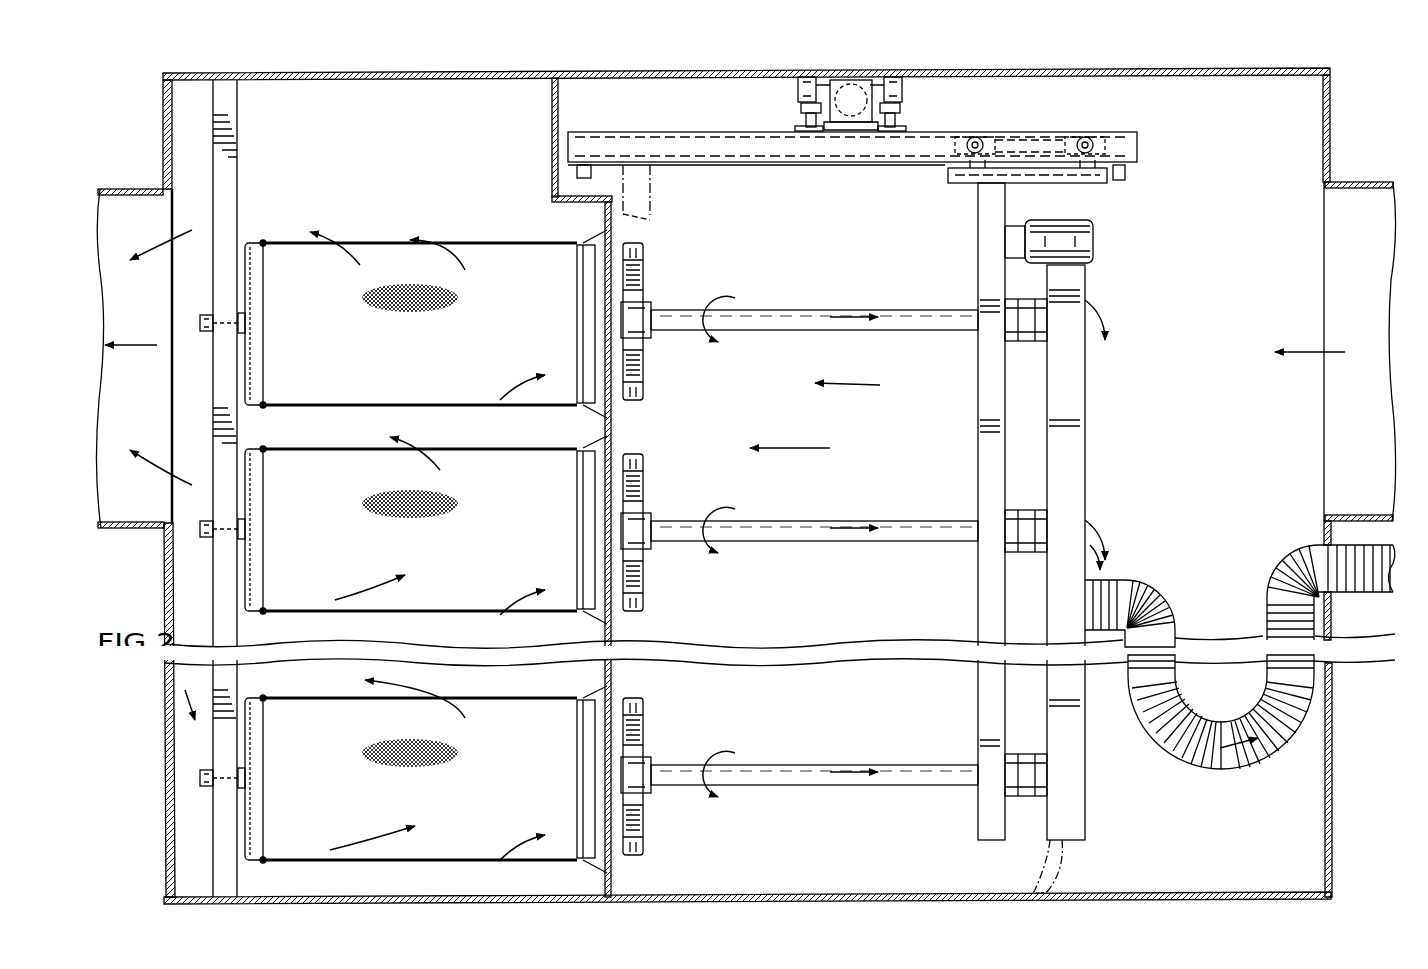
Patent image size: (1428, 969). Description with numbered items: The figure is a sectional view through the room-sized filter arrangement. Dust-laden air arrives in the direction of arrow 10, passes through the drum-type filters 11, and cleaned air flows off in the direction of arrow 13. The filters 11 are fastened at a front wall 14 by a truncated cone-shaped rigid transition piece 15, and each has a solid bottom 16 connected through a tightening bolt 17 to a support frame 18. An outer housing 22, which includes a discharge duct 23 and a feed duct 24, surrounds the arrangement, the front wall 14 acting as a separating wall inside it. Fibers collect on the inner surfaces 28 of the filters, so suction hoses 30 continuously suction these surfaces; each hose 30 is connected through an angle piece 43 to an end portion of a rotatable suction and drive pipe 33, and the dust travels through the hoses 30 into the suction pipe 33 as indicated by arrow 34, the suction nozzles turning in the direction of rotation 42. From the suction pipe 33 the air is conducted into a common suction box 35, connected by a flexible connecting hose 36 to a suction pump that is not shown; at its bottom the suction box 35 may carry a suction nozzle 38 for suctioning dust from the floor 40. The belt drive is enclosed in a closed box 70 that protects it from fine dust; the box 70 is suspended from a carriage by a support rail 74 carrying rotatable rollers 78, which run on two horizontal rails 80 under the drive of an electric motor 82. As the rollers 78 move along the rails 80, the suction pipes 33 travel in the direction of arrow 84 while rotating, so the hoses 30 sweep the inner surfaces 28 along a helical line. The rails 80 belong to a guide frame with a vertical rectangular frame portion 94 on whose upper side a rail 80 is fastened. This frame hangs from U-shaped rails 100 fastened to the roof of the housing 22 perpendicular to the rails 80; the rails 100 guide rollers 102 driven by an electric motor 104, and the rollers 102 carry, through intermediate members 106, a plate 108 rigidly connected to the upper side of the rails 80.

The arrow 10 is at (1340, 352).
The drum-type filters 11 is at (393, 243).
The arrow 13 is at (150, 345).
The front wall 14 is at (552, 112).
The transition piece 15 is at (590, 375).
The solid bottom 16 is at (250, 297).
The tightening bolt 17 is at (225, 330).
The support frame 18 is at (232, 160).
The outer housing 22 is at (394, 78).
The discharge duct 23 is at (113, 196).
The feed duct 24 is at (1335, 188).
The inner surfaces 28 is at (503, 255).
The suction hoses 30 is at (645, 255).
The suction and drive pipe 33 is at (832, 310).
The arrow 34 is at (828, 324).
The suction box 35 is at (1085, 388).
The flexible connecting hose 36 is at (1240, 770).
The suction nozzle 38 is at (1065, 870).
The floor 40 is at (1193, 893).
The direction of rotation 42 is at (738, 298).
The angle piece 43 is at (655, 322).
The box 70 is at (978, 250).
The support rail 74 is at (1095, 180).
The rollers 78 is at (985, 137).
The horizontal rails 80 is at (697, 132).
The electric motor 82 is at (1035, 140).
The arrow 84 is at (860, 392).
The rectangular frame portion 94 is at (640, 208).
The rails 100 is at (798, 88).
The rollers 102 is at (801, 108).
The electric motor 104 is at (840, 108).
The intermediate members 106 is at (855, 110).
The plate 108 is at (862, 108).